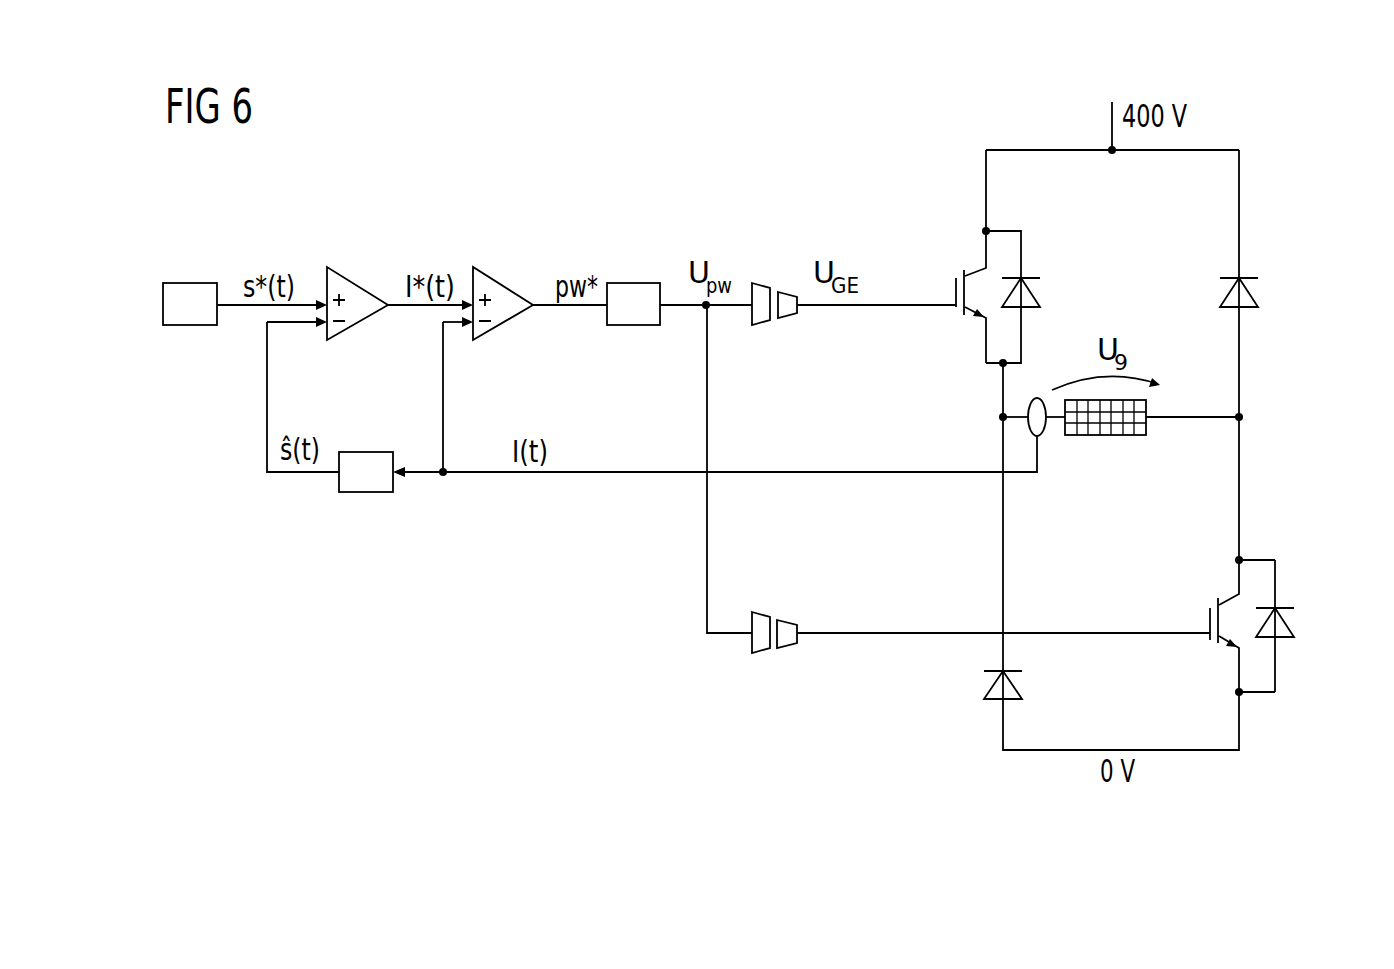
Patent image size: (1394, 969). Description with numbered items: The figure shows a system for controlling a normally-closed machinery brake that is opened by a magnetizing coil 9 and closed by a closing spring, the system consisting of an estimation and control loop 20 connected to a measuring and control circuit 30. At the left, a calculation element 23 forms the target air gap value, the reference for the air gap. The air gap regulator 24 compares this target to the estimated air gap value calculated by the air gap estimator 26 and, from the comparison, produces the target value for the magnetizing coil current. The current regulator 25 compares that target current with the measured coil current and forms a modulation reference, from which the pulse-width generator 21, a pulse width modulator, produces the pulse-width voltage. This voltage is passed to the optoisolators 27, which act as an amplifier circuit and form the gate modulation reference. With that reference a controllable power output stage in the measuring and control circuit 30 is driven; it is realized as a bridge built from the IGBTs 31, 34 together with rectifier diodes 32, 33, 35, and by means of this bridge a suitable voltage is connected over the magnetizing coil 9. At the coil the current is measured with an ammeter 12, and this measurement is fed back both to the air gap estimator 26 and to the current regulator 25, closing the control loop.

The setpoint generator 23 is at (188, 283).
The air gap regulator 24 is at (360, 282).
The current regulator 25 is at (507, 282).
The pulse-width generator 21 is at (632, 283).
The optoisolator 27 is at (763, 283).
The IGBT 31 is at (957, 287).
The diode 32 is at (1258, 290).
The measuring and control circuit 30 is at (1324, 380).
The ammeter 12 is at (1037, 397).
The magnetizing coil 9 is at (1106, 435).
The air gap estimator 26 is at (363, 492).
The estimation and control loop 20 is at (536, 585).
The IGBT 34 is at (1209, 617).
The freewheeling diode 35 is at (1294, 632).
The freewheeling diode 33 is at (1020, 695).